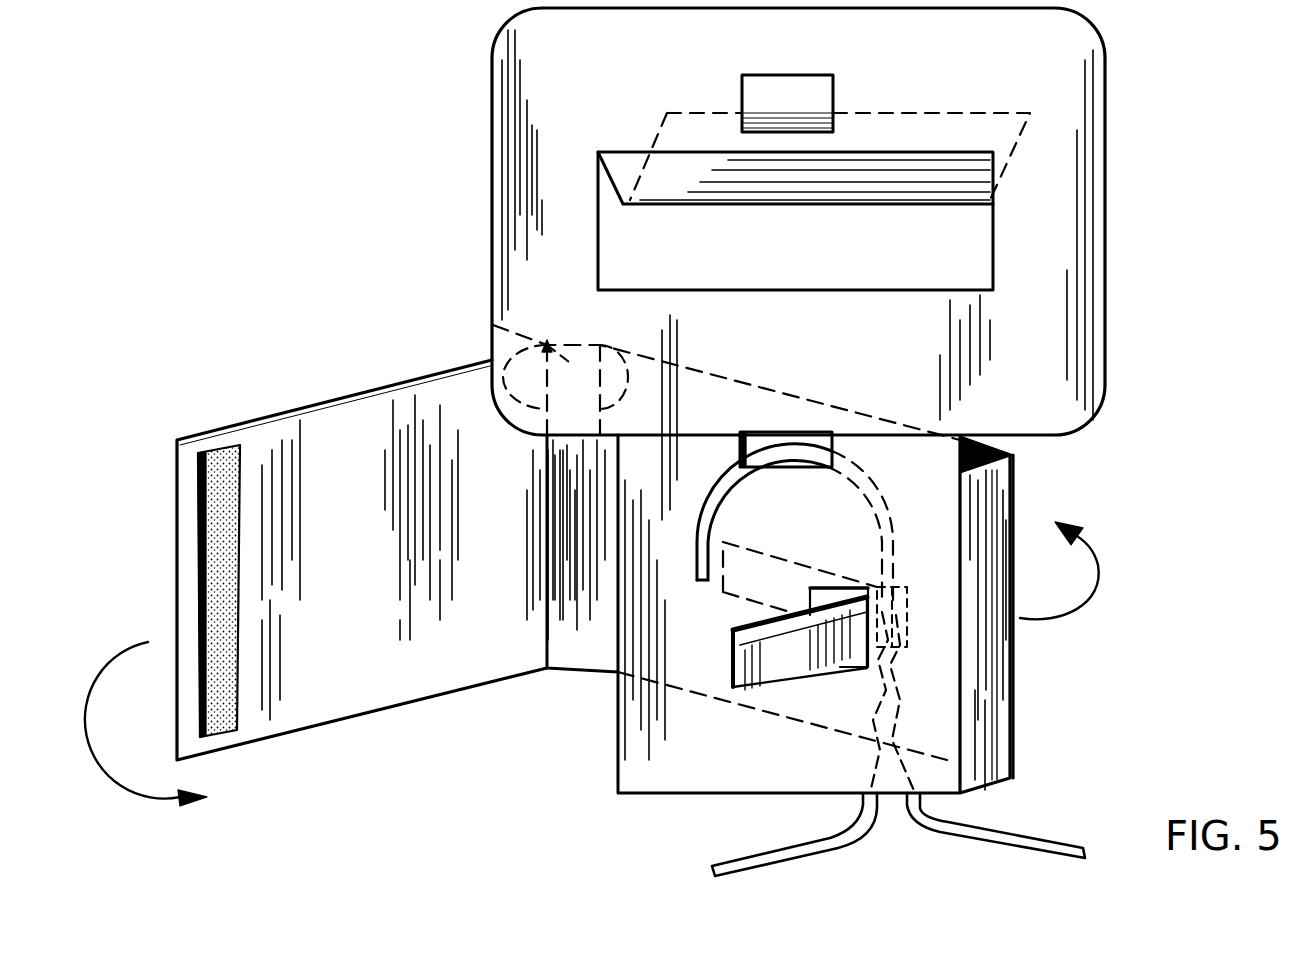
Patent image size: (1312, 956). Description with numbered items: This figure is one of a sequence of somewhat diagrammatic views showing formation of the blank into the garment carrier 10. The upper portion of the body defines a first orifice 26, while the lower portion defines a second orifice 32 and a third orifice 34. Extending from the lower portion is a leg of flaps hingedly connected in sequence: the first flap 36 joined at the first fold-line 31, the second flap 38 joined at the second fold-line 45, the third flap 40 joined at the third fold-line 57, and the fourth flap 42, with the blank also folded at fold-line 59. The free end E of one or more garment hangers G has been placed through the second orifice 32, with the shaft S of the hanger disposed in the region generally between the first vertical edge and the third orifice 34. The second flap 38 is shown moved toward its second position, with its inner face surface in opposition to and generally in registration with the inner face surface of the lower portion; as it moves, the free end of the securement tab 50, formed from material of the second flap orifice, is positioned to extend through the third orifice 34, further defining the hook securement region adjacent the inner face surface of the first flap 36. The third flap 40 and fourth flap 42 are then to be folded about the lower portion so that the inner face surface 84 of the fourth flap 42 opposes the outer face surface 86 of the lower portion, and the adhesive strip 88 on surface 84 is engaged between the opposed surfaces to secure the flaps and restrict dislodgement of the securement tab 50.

The garment carrier 10 is at (363, 153).
The first orifice 26 is at (647, 256).
The third flap 40 is at (493, 325).
The fourth flap 42 is at (355, 425).
The fold-line 59 is at (525, 377).
The third fold-line 57 is at (625, 377).
The second flap 38 is at (890, 447).
The second orifice 32 is at (763, 435).
The free end E is at (707, 503).
The first fold-line 31 is at (960, 507).
The shaft S is at (885, 545).
The third orifice 34 is at (827, 598).
The inner face surface 84 is at (372, 522).
The outer face surface 86 is at (725, 632).
The securement tab 50 is at (802, 665).
The adhesive strip 88 is at (223, 620).
The first flap 36 is at (992, 688).
The second fold-line 45 is at (1013, 726).
The garment hanger G is at (1043, 838).